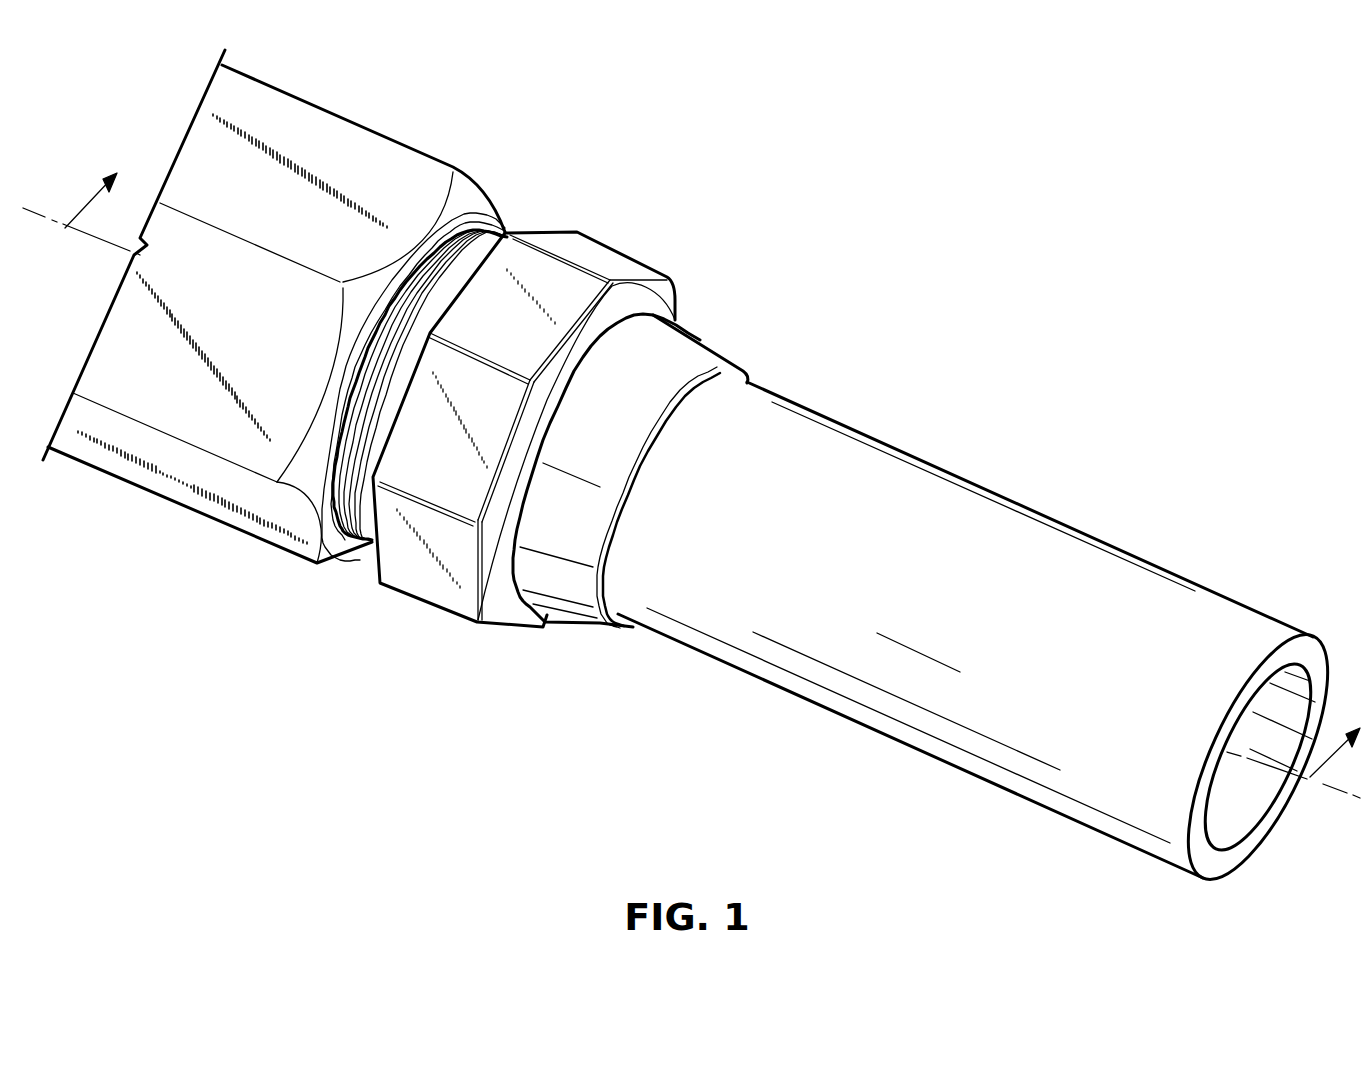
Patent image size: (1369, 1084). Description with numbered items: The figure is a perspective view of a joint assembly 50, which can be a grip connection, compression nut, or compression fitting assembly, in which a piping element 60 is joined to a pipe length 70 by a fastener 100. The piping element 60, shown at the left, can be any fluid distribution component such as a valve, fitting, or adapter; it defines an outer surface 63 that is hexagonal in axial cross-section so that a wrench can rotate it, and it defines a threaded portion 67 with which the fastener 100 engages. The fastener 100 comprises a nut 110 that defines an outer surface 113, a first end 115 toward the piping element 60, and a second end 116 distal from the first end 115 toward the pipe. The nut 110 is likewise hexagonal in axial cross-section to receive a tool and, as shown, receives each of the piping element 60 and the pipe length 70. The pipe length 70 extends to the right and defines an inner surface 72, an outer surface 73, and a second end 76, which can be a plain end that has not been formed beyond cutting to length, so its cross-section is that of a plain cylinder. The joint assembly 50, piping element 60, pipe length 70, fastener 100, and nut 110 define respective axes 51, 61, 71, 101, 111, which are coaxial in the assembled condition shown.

The joint assembly 50 is at (693, 504).
The axis 51 is at (1217, 858).
The piping element 60 is at (322, 142).
The axis 61 is at (1217, 858).
The outer surface 63 is at (412, 178).
The threaded portion 67 is at (347, 488).
The pipe length 70 is at (987, 639).
The axis 71 is at (1217, 858).
The inner surface 72 is at (1287, 700).
The outer surface 73 is at (900, 710).
The second end 76 is at (1283, 657).
The fastener 100 is at (506, 449).
The axis 101 is at (1217, 858).
The nut 110 is at (506, 449).
The axis 111 is at (1362, 798).
The outer surface 113 is at (593, 250).
The first end 115 is at (373, 563).
The second end 116 is at (617, 627).